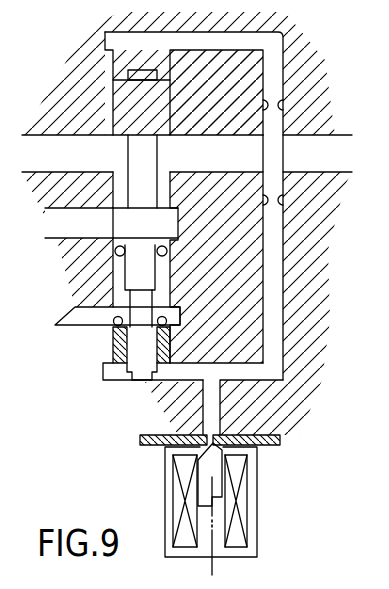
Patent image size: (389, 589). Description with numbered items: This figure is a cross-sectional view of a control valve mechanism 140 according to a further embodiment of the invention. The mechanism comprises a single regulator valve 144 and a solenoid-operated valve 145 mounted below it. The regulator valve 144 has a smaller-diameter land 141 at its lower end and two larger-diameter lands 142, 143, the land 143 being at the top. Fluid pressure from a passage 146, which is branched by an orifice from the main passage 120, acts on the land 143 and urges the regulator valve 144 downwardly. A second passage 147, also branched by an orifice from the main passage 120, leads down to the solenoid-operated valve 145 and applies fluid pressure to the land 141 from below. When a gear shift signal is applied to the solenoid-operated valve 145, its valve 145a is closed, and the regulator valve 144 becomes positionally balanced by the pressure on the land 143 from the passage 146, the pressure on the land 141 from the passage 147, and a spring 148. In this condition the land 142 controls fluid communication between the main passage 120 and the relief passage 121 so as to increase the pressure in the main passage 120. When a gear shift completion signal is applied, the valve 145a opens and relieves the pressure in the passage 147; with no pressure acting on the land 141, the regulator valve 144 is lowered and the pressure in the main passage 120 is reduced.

The main passage 120 is at (310, 149).
The relief passage 121 is at (65, 223).
The control valve mechanism 140 is at (312, 93).
The smaller-diameter land 141 is at (142, 357).
The larger-diameter land 142 is at (128, 233).
The larger-diameter land 143 is at (125, 88).
The regulator valve 144 is at (137, 167).
The solenoid-operated valve 145 is at (250, 492).
The valve 145a is at (280, 443).
The passage 146 is at (257, 40).
The passage 147 is at (277, 373).
The spring 148 is at (112, 328).